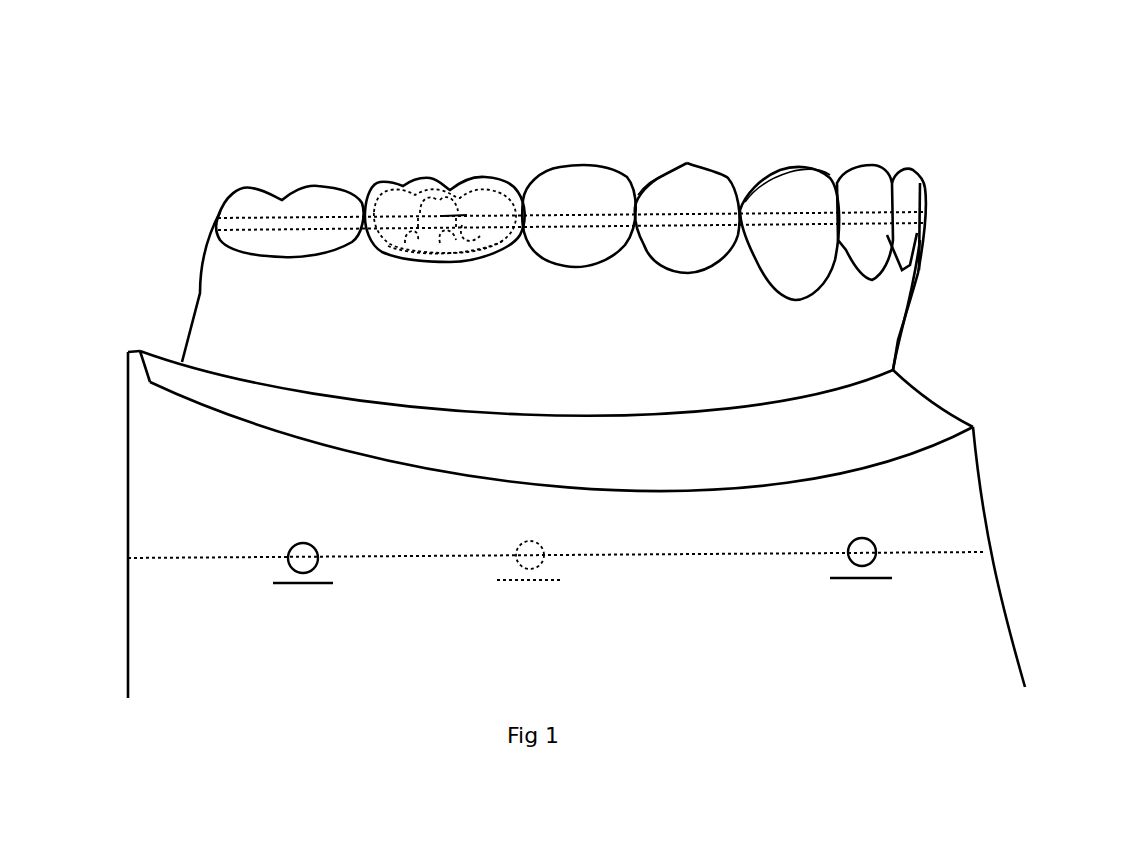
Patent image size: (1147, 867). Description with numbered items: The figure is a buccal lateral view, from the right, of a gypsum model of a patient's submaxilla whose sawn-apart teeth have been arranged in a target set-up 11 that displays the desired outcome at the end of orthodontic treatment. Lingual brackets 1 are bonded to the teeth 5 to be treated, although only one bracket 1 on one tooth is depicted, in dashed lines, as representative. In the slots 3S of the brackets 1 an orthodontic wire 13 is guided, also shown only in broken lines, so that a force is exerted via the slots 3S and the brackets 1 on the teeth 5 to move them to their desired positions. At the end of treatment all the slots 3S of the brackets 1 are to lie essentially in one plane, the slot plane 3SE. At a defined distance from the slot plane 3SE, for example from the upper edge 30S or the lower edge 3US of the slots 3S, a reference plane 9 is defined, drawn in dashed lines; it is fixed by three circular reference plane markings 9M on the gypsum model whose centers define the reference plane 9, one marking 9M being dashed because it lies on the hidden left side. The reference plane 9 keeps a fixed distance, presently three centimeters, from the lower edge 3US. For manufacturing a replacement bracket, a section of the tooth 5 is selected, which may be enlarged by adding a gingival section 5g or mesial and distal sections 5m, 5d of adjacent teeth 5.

The bracket 1 is at (478, 205).
The slot 3S is at (430, 223).
The upper edge of the slot 30S is at (443, 216).
The lower edge of the slot 3US is at (490, 257).
The slot plane 3SE is at (190, 222).
The tooth 5 is at (580, 193).
The distal section 5d is at (645, 233).
The gingival section 5g is at (698, 278).
The mesial section 5m is at (727, 233).
The orthodontic wire 13 is at (797, 218).
The target set-up 11 is at (990, 310).
The reference plane 9 is at (697, 557).
The reference plane marking 9M is at (287, 567).